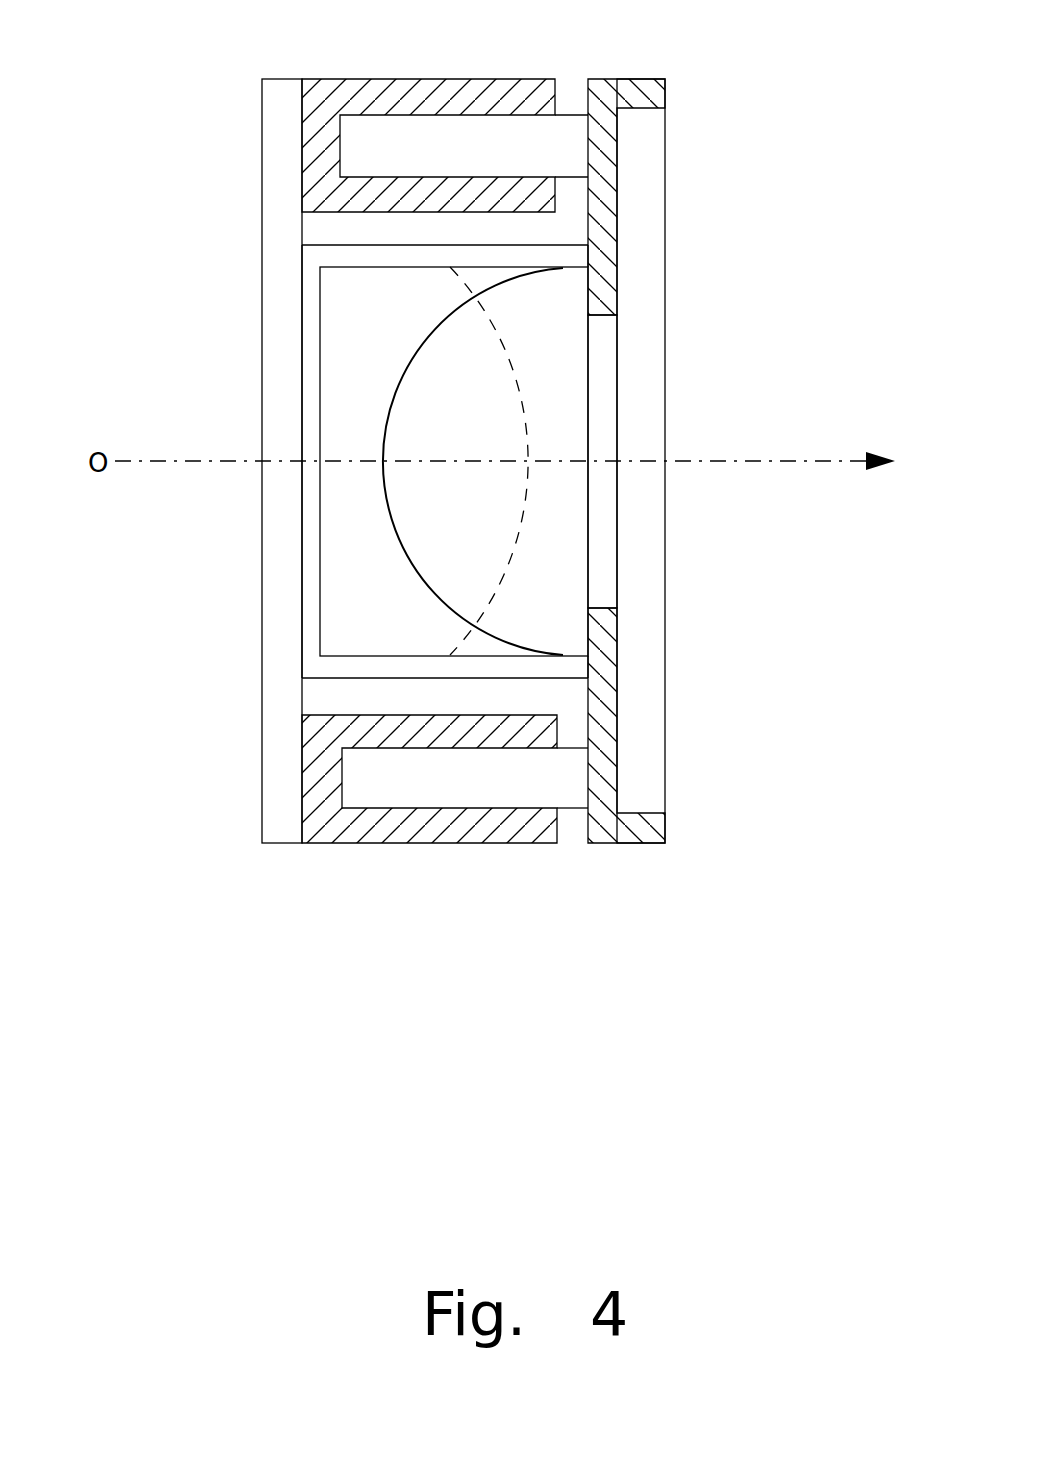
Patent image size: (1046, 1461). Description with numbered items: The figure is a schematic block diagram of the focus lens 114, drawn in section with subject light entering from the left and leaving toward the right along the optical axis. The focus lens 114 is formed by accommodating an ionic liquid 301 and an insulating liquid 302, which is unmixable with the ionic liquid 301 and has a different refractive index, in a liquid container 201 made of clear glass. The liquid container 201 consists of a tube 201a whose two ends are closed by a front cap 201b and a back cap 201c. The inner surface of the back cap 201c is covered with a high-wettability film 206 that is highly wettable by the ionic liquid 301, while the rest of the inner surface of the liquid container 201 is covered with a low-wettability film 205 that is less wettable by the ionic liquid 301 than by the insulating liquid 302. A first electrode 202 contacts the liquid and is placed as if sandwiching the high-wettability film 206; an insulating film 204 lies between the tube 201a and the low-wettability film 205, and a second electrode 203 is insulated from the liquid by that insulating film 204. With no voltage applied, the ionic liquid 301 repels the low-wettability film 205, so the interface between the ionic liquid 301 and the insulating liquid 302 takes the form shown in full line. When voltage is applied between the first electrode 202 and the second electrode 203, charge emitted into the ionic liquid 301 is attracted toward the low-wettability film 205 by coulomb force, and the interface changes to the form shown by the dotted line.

The focus lens 114 is at (163, 166).
The liquid container 201 is at (698, 920).
The tube 201a is at (482, 845).
The cap 201b is at (282, 845).
The cap 201c is at (653, 787).
The first electrode 202 is at (645, 87).
The second electrode 203 is at (327, 92).
The insulating film 204 is at (565, 207).
The low-wettability film 205 is at (562, 258).
The high-wettability film 206 is at (605, 508).
The ionic liquid 301 is at (560, 562).
The insulating liquid 302 is at (365, 625).